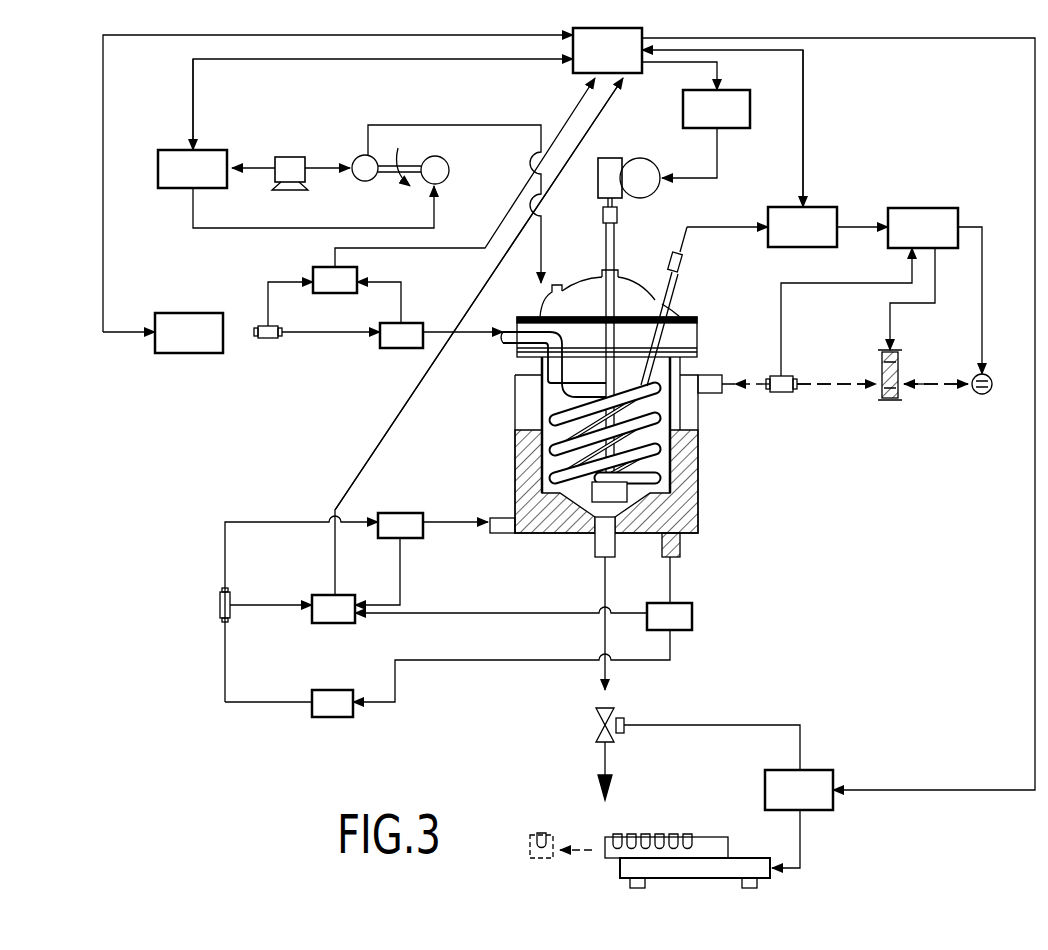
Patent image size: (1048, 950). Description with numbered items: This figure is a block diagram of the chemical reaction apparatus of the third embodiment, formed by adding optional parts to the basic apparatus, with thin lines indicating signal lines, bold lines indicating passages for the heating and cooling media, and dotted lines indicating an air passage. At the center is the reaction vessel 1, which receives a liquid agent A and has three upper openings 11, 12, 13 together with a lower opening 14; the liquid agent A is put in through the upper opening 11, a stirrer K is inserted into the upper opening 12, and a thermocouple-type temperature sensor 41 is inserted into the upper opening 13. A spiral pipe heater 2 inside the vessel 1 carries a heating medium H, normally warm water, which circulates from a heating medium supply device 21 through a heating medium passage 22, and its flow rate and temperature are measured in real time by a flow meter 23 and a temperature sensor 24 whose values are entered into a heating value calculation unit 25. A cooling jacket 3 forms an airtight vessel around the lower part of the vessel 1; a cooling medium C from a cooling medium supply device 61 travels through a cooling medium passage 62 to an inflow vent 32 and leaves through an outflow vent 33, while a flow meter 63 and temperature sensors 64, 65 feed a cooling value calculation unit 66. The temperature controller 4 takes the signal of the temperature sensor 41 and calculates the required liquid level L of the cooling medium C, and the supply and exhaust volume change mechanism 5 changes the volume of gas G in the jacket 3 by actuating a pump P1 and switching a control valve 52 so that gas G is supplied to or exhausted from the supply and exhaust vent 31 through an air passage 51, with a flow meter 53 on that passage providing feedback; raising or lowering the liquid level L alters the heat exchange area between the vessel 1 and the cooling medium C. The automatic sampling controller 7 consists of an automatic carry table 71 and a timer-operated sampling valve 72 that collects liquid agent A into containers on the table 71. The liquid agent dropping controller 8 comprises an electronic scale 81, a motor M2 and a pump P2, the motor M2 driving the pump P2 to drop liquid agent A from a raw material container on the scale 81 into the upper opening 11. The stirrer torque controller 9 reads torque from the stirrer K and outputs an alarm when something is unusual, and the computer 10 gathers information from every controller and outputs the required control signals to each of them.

The reaction vessel 1 is at (601, 408).
The heater 2 is at (548, 455).
The cooling jacket 3 is at (710, 468).
The temperature controller 4 is at (815, 207).
The supply and exhaust volume change mechanism 5 is at (920, 208).
The automatic sampling controller 7 is at (812, 770).
The liquid agent dropping controller 8 is at (213, 150).
The stirrer torque controller 9 is at (750, 112).
The computer 10 is at (640, 30).
The upper opening 11 is at (548, 292).
The upper opening 12 is at (618, 276).
The upper opening 13 is at (684, 315).
The lower opening 14 is at (612, 558).
The heating medium supply device 21 is at (180, 353).
The heating medium passage 22 is at (340, 333).
The flow meter 23 is at (268, 338).
The temperature sensor 24 is at (395, 323).
The heating value calculation unit 25 is at (322, 267).
The supply and exhaust vent 31 is at (712, 393).
The inflow vent 32 is at (492, 528).
The outflow vent 33 is at (672, 557).
The temperature sensor 41 is at (684, 262).
The air passage 51 is at (820, 388).
The control valve 52 is at (898, 370).
The flow meter 53 is at (785, 376).
The cooling medium supply device 61 is at (335, 717).
The cooling medium passage 62 is at (246, 522).
The flow meter 63 is at (220, 603).
The temperature sensor 64 is at (388, 513).
The temperature sensor 65 is at (692, 615).
The cooling value calculation unit 66 is at (333, 623).
The automatic carry table 71 is at (738, 858).
The sampling valve 72 is at (596, 722).
The electronic scale 81 is at (293, 157).
The pump P1 is at (984, 403).
The pump P2 is at (365, 168).
The motor M2 is at (413, 167).
The stirrer K is at (629, 190).
The heating medium H is at (508, 346).
The liquid level L is at (548, 418).
The cooling medium C is at (538, 505).
The liquid agent A is at (596, 542).
The gas G is at (683, 378).